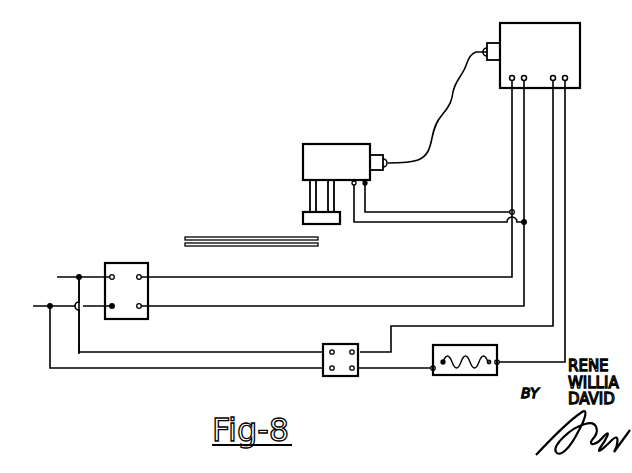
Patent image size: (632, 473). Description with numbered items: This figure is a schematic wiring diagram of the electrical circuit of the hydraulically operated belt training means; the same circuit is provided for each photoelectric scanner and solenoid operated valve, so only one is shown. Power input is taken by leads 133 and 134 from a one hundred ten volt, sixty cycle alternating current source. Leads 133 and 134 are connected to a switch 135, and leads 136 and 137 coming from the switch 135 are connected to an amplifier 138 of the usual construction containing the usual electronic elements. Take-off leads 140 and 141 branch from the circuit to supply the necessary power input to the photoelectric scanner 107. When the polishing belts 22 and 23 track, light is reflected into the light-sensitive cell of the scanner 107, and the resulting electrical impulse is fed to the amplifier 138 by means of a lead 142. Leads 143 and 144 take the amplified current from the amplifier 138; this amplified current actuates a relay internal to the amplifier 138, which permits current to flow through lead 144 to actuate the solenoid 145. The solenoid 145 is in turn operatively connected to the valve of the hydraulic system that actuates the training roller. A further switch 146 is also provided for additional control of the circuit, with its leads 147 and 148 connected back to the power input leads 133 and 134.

The polishing belt 22 is at (237, 236).
The polishing belt 23 is at (263, 247).
The photoelectric scanner 107 is at (306, 219).
The lead 133 is at (61, 274).
The lead 134 is at (32, 303).
The switch 135 is at (117, 266).
The lead 136 is at (193, 278).
The lead 137 is at (200, 308).
The amplifier 138 is at (568, 48).
The take-off lead 140 is at (427, 212).
The take-off lead 141 is at (435, 222).
The lead 142 is at (440, 117).
The lead 143 is at (552, 195).
The lead 144 is at (566, 195).
The solenoid 145 is at (443, 368).
The switch 146 is at (340, 348).
The lead 147 is at (252, 351).
The lead 148 is at (263, 368).